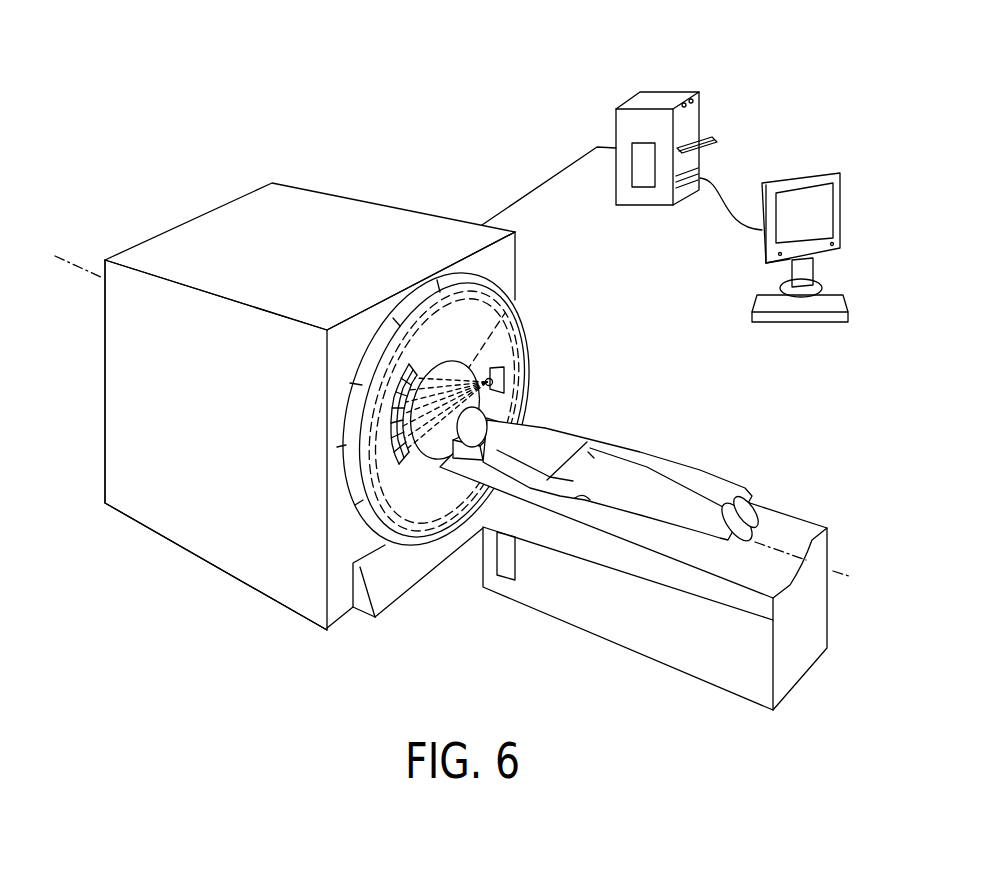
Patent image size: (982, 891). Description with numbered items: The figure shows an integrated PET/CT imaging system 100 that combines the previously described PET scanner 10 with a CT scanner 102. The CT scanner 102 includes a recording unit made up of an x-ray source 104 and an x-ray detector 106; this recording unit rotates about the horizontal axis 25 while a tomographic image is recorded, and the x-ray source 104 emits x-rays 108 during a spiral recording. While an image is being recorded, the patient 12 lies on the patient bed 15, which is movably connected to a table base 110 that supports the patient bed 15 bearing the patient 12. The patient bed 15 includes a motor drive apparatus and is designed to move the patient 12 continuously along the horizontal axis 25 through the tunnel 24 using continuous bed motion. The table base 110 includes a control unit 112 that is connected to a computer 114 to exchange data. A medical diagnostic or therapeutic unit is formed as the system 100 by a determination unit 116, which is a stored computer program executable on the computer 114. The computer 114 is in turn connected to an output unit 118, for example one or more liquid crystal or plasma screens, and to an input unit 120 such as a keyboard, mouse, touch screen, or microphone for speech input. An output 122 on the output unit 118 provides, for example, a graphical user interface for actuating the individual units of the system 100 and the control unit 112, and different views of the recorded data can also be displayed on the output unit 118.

The PET scanner 10 is at (133, 502).
The PET/CT imaging system 100 is at (232, 424).
The CT scanner 102 is at (247, 557).
The x-ray source 104 is at (507, 379).
The x-ray detector 106 is at (398, 510).
The x-rays 108 is at (524, 292).
The table base 110 is at (613, 627).
The control unit 112 is at (507, 553).
The computer 114 is at (650, 102).
The determination unit 116 is at (642, 190).
The output unit 118 is at (803, 175).
The input unit 120 is at (800, 313).
The output 122 is at (780, 240).
The patient 12 is at (551, 441).
The patient bed 15 is at (803, 530).
The tunnel 24 is at (430, 422).
The horizontal axis 25 is at (842, 568).